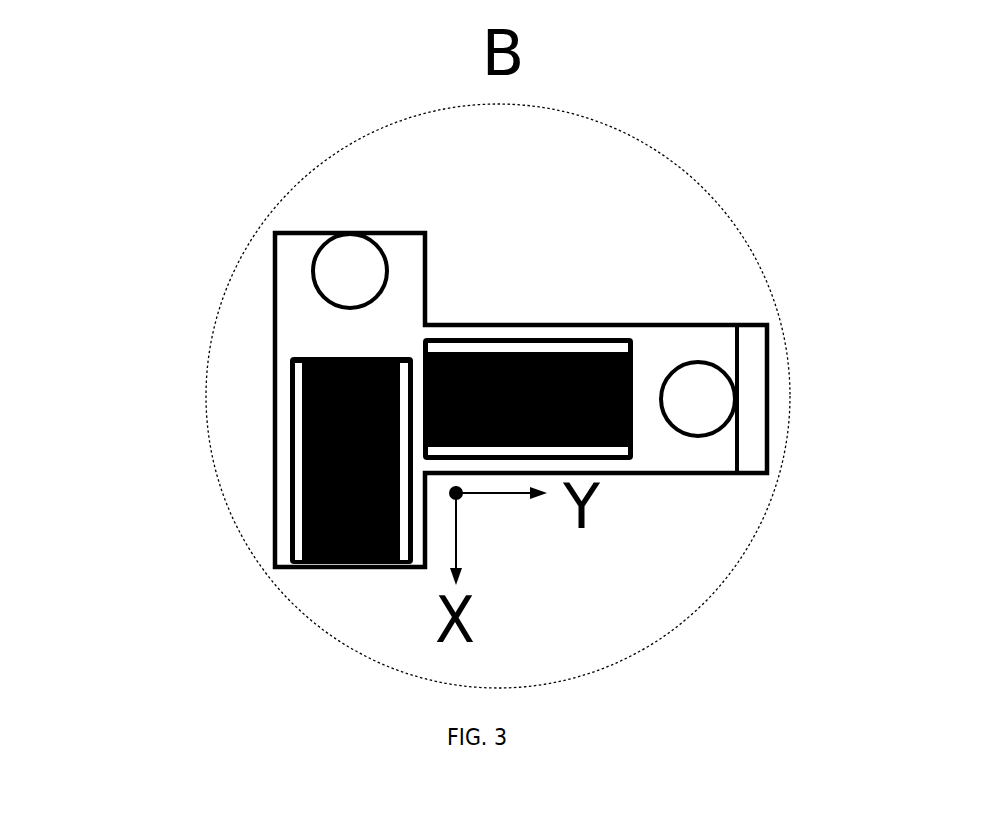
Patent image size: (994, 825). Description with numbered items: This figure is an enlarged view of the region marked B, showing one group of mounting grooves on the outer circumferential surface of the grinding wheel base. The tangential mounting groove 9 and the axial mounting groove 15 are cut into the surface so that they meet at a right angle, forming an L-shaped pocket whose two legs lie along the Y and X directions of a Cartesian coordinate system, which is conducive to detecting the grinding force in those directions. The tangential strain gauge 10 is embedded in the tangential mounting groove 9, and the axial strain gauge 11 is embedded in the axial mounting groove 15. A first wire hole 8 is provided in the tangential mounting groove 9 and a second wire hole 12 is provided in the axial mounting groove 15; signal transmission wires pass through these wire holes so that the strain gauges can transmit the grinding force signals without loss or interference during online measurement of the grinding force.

The first wire hole 8 is at (335, 273).
The tangential mounting groove 9 is at (333, 327).
The tangential strain gauge 10 is at (298, 383).
The axial strain gauge 11 is at (487, 452).
The second wire hole 12 is at (698, 387).
The axial mounting groove 15 is at (675, 463).